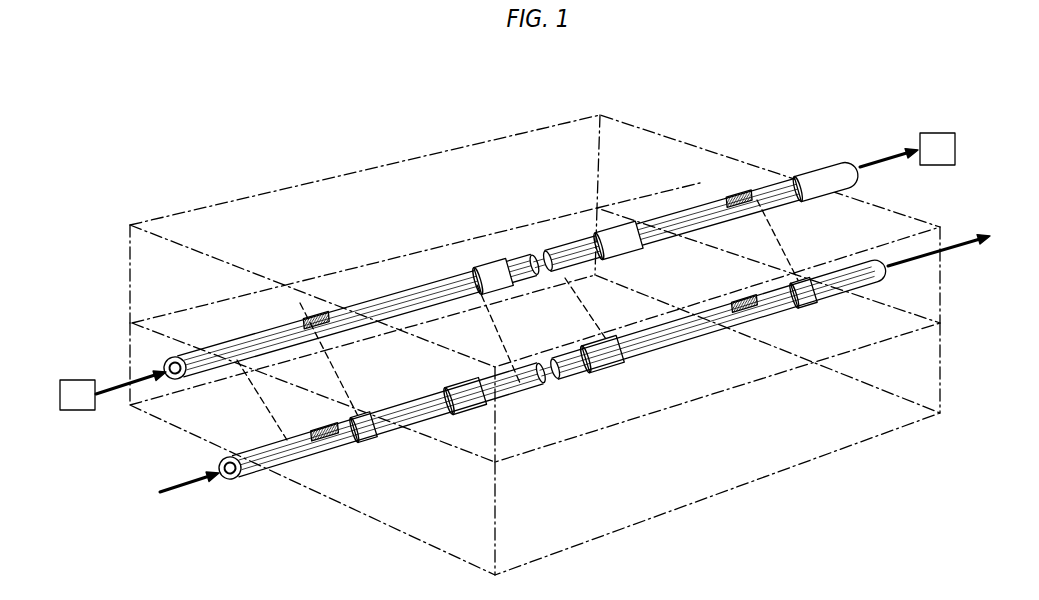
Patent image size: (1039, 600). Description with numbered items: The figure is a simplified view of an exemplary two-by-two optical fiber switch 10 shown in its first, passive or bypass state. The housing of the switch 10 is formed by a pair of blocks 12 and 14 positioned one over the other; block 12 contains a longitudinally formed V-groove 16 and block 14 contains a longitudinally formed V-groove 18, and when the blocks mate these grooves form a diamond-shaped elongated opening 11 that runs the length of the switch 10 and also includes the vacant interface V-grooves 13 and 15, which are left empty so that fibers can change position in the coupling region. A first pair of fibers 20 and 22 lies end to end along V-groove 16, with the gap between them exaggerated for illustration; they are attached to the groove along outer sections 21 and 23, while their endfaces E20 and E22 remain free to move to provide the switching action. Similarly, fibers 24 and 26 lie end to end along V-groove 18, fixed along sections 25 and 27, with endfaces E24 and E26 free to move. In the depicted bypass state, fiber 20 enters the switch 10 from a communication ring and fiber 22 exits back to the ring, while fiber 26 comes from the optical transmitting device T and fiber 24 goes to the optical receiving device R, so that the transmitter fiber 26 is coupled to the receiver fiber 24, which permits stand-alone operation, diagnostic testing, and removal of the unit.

The optical fiber switch 10 is at (552, 69).
The elongated opening 11 is at (565, 345).
The block 12 is at (940, 387).
The interface V-groove 13 is at (257, 362).
The block 14 is at (947, 299).
The interface V-groove 15 is at (363, 412).
The V-groove 16 is at (561, 419).
The V-groove 18 is at (518, 222).
The optical fiber 20 is at (248, 474).
The attachment section 21 is at (340, 458).
The optical fiber 22 is at (878, 272).
The attachment section 23 is at (745, 333).
The optical fiber 24 is at (838, 178).
The attachment section 25 is at (320, 313).
The optical fiber 26 is at (207, 352).
The attachment section 27 is at (732, 195).
The endface of fiber 20 E20 is at (542, 369).
The endface of fiber 22 E22 is at (557, 368).
The endface of fiber 24 E24 is at (544, 262).
The endface of fiber 26 E26 is at (532, 266).